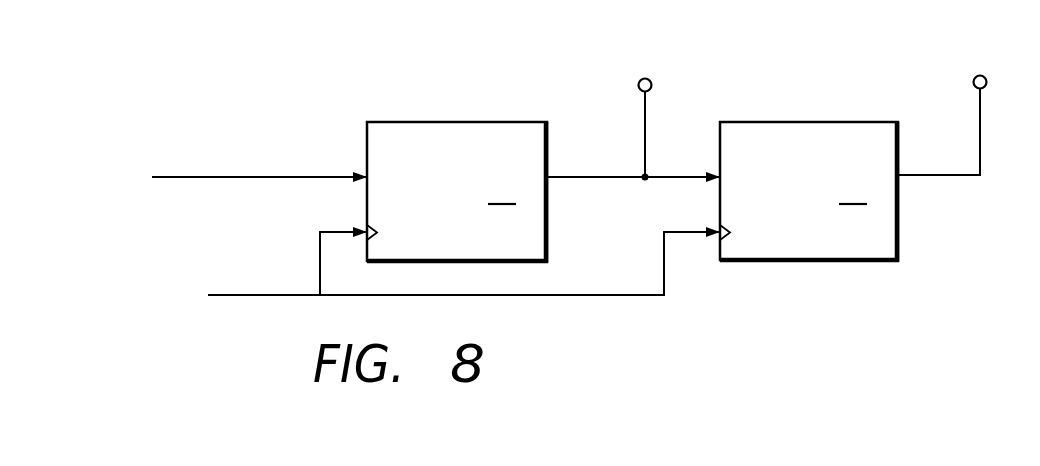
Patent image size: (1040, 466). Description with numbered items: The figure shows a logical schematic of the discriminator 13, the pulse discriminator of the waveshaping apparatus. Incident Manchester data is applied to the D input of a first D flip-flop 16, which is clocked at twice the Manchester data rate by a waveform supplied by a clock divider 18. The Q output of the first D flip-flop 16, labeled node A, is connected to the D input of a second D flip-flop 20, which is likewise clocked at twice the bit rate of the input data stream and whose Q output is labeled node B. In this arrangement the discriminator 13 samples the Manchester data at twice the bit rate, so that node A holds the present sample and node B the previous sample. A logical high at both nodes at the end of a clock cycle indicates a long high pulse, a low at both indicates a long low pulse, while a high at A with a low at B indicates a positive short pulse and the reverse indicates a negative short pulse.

The discriminator 13 is at (347, 83).
The first D flip-flop 16 is at (460, 122).
The second D flip-flop 20 is at (793, 122).
The clock divider 18 is at (840, 427).